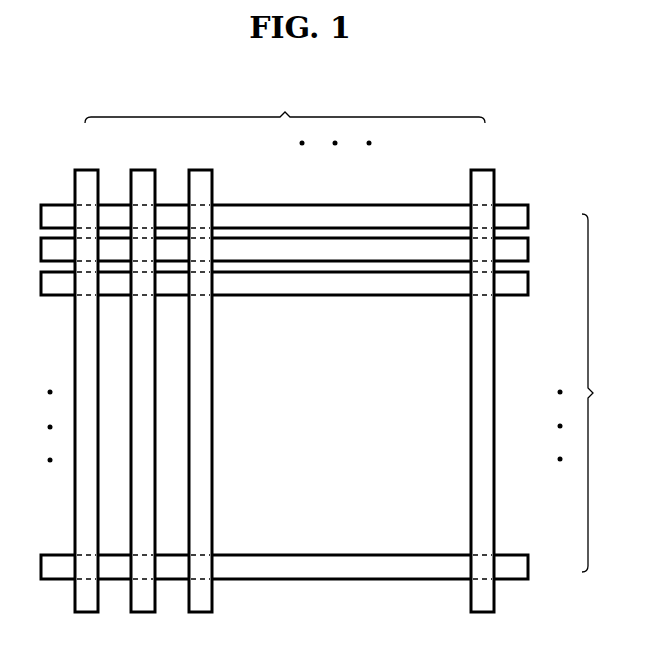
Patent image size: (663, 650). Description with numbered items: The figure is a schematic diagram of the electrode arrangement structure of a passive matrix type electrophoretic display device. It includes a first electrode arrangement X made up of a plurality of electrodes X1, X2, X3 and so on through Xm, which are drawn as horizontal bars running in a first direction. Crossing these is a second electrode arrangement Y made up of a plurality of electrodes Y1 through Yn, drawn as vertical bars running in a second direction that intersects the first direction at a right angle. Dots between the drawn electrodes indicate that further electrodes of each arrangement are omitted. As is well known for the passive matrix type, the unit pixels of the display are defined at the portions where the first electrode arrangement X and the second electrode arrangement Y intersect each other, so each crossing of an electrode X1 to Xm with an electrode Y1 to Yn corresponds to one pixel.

The second electrode arrangement Y is at (285, 104).
The first electrode of the second electrode arrangement Y1 is at (143, 373).
The n-th electrode of the second electrode arrangement Yn is at (482, 373).
The first electrode arrangement X is at (597, 393).
The first electrode of the first electrode arrangement X1 is at (307, 216).
The second electrode of the first electrode arrangement X2 is at (307, 250).
The third electrode of the first electrode arrangement X3 is at (307, 283).
The m-th electrode of the first electrode arrangement Xm is at (307, 567).